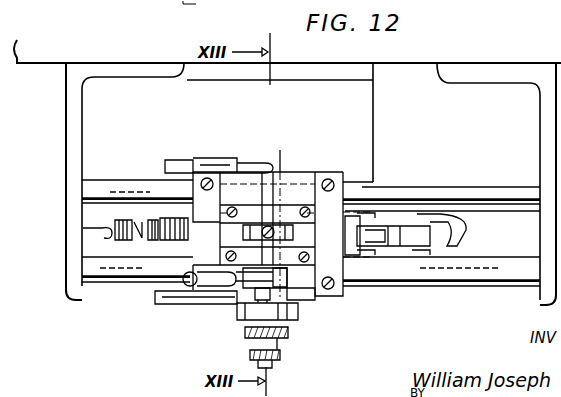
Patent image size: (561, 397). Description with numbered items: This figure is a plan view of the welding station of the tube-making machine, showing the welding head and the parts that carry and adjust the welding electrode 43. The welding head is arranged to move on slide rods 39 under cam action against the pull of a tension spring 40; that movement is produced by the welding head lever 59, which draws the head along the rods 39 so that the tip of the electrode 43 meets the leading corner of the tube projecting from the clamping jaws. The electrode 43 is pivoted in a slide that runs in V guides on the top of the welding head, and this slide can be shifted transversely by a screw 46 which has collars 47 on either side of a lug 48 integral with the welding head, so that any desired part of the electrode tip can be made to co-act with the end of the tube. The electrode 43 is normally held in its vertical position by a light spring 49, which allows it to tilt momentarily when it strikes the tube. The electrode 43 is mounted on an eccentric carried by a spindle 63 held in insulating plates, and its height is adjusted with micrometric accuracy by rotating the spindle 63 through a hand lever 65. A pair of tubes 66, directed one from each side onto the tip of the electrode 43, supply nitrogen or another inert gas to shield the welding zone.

The slide rods 39 is at (485, 195).
The tension spring 40 is at (153, 242).
The welding electrode 43 is at (295, 238).
The screw 46 is at (288, 333).
The collars 47 is at (259, 325).
The lug 48 is at (298, 317).
The light spring 49 is at (178, 224).
The welding head lever 59 is at (462, 229).
The spindle 63 is at (300, 297).
The hand lever 65 is at (186, 285).
The tubes 66 is at (182, 166).